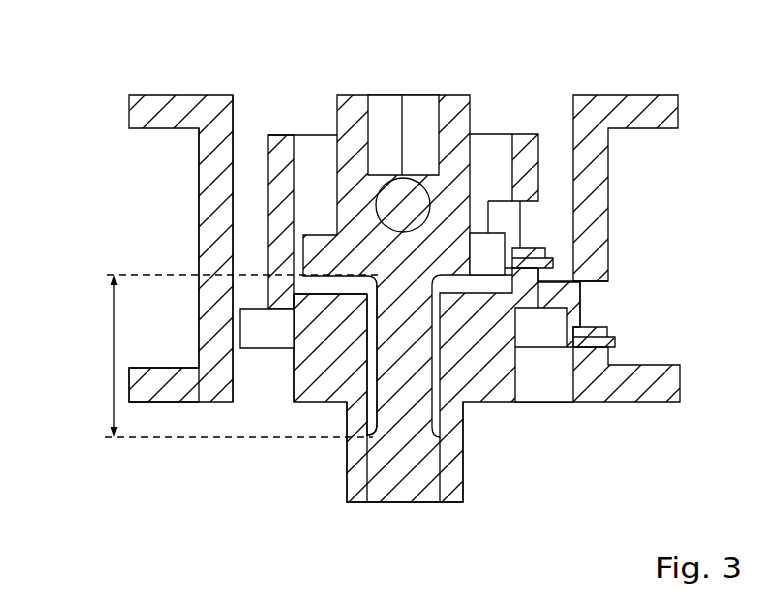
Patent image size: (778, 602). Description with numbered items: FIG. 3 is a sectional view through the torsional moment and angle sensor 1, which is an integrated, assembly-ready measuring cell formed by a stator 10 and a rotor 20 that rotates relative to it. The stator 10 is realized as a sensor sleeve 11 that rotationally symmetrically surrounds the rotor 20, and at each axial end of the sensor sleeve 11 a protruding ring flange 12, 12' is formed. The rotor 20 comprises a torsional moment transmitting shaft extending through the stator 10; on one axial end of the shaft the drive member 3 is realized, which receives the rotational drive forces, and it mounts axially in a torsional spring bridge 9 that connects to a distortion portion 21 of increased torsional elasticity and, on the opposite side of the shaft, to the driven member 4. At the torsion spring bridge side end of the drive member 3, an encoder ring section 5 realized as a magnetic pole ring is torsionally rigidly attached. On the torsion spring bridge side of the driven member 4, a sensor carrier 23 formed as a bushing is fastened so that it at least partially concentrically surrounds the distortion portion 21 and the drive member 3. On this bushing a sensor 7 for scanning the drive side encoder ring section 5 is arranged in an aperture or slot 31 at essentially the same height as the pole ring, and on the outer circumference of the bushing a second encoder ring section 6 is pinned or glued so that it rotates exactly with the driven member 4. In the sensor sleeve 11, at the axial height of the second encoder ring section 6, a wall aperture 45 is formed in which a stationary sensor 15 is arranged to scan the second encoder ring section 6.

The torsional moment and angle sensor 1 is at (85, 92).
The drive member 3 is at (452, 108).
The driven member 4 is at (395, 473).
The encoder ring section 5 is at (488, 255).
The second encoder ring section 6 is at (545, 332).
The sensor 7 is at (532, 244).
The torsional spring bridge 9 is at (373, 291).
The stator 10 is at (633, 86).
The sensor sleeve 11 is at (212, 186).
The ring flange 12 is at (178, 216).
The ring flange 12' is at (108, 425).
The stationary sensor 15 is at (598, 328).
The rotor 20 is at (523, 120).
The distortion portion 21 is at (345, 400).
The sensor carrier 23 is at (275, 216).
The slot 31 is at (386, 118).
The wall aperture 45 is at (598, 295).